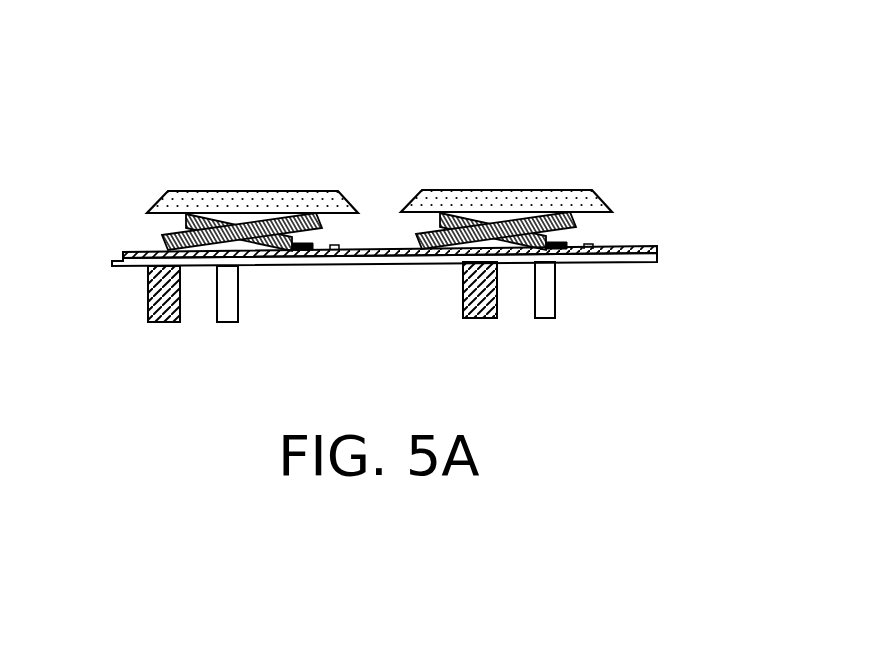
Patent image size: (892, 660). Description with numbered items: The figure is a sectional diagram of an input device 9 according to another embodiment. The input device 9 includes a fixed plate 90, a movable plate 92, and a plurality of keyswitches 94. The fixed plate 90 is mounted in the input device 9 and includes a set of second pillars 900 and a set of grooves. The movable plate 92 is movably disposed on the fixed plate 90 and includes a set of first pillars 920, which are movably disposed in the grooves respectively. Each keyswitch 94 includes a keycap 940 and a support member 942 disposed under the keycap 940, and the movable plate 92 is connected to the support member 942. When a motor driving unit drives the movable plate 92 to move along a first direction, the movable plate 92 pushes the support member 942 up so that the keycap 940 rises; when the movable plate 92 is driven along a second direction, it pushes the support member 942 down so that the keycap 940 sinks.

The input device 9 is at (214, 110).
The fixed plate 90 is at (627, 262).
The movable plate 92 is at (658, 250).
The keyswitch 94 is at (522, 188).
The keycap 940 is at (591, 200).
The support member 942 is at (552, 229).
The second pillars 900 is at (547, 290).
The first pillars 920 is at (481, 296).